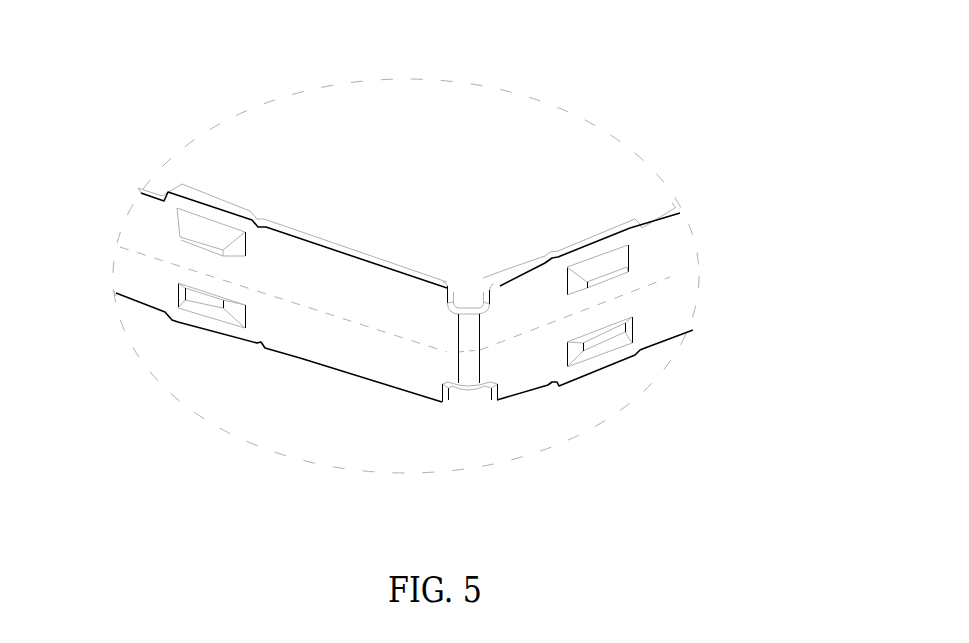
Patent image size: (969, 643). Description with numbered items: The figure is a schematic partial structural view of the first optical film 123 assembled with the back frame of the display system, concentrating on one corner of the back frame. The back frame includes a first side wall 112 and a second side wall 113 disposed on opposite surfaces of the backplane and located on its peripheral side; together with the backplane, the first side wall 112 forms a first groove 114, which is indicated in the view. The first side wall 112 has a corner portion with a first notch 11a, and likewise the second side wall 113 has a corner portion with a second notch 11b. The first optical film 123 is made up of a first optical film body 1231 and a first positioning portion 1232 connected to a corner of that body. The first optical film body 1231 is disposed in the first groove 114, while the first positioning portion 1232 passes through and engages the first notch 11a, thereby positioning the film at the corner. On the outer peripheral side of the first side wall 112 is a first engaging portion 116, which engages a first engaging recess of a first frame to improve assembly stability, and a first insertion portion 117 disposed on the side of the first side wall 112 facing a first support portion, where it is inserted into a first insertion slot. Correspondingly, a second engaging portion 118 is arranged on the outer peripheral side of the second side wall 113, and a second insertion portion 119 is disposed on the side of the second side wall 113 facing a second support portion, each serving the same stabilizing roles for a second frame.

The first groove 114 is at (292, 141).
The first insertion portion 117 is at (201, 193).
The first notch 11a is at (478, 260).
The second notch 11b is at (463, 423).
The first engaging portion 116 is at (190, 228).
The second engaging portion 118 is at (195, 310).
The second insertion portion 119 is at (222, 338).
The first side wall 112 is at (352, 297).
The second side wall 113 is at (386, 366).
The first optical film 123 is at (664, 301).
The first optical film body 1231 is at (497, 275).
The first positioning portion 1232 is at (497, 288).